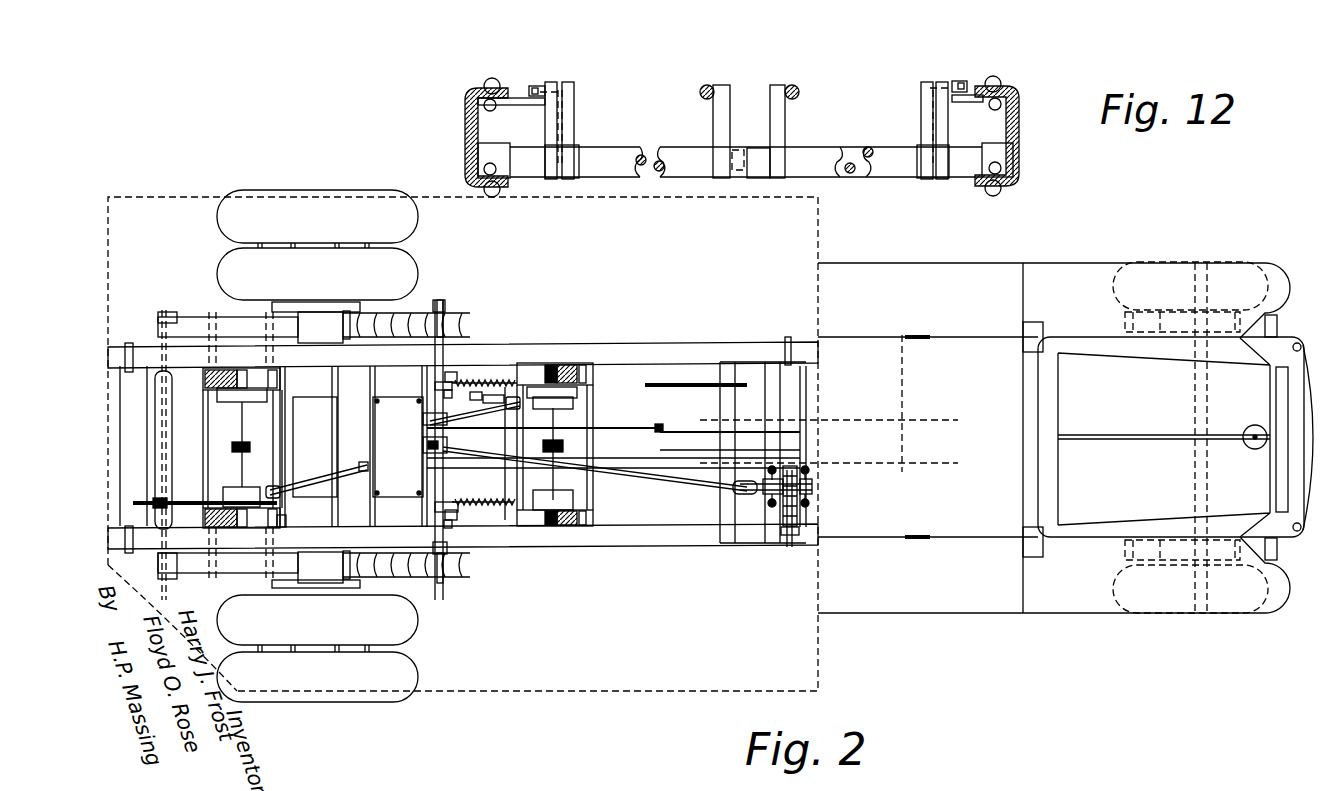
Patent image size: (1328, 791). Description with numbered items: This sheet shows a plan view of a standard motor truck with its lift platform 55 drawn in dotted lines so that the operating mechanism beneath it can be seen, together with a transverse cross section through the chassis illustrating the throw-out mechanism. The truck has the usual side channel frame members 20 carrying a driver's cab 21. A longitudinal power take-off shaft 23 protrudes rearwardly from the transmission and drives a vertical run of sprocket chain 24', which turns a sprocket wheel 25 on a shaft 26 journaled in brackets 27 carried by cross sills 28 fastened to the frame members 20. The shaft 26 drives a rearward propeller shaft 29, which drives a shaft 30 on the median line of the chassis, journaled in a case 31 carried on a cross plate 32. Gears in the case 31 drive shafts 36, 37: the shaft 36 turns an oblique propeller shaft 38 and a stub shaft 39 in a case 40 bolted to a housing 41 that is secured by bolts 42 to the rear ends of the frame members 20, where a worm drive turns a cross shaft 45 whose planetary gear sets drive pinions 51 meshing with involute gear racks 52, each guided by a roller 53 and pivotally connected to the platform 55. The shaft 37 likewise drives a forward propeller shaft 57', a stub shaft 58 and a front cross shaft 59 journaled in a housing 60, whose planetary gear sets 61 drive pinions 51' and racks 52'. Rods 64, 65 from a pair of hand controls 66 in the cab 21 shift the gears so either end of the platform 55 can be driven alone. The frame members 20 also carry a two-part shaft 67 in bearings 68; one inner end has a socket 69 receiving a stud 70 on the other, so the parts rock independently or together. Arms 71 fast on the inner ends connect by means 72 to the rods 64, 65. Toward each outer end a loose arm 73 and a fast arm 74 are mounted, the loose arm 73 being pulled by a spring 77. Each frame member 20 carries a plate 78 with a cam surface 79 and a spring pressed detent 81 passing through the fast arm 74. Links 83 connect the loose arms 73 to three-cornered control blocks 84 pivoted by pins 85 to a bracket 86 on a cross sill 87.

In FIG. 12, the side channel frame members 20 is at (466, 101).
In FIG. 2, the side channel frame members 20 is at (700, 336).
In FIG. 2, the driver's cab 21 is at (940, 593).
In FIG. 2, the power take-off shaft 23 is at (800, 535).
In FIG. 2, the sprocket chain 24' is at (830, 500).
In FIG. 2, the sprocket wheel 25 is at (795, 478).
In FIG. 2, the shaft 26 is at (770, 495).
In FIG. 2, the brackets 27 is at (786, 520).
In FIG. 2, the cross sills 28 is at (808, 398).
In FIG. 2, the propeller shaft 29 is at (705, 480).
In FIG. 2, the shaft 30 is at (445, 425).
In FIG. 2, the case 31 is at (410, 575).
In FIG. 2, the cross plate 32 is at (403, 572).
In FIG. 2, the shaft 36 is at (366, 465).
In FIG. 2, the shaft 37 is at (425, 416).
In FIG. 2, the propeller shaft 38 is at (305, 490).
In FIG. 2, the stub shaft 39 is at (285, 525).
In FIG. 2, the case 40 is at (245, 450).
In FIG. 2, the housing 41 is at (240, 465).
In FIG. 2, the bolts 42 is at (268, 345).
In FIG. 2, the cross shaft 45 is at (240, 470).
In FIG. 2, the pinion 51 is at (228, 473).
In FIG. 2, the pinions 51' is at (589, 436).
In FIG. 2, the gear rack 52 is at (231, 448).
In FIG. 2, the involute racks 52' is at (590, 456).
In FIG. 2, the roller 53 is at (200, 372).
In FIG. 2, the platform 55 is at (620, 692).
In FIG. 2, the propeller shaft 57' is at (505, 344).
In FIG. 2, the stub shaft 58 is at (518, 400).
In FIG. 2, the front cross shaft 59 is at (557, 477).
In FIG. 2, the housing 60 is at (573, 493).
In FIG. 2, the planetary gear sets 61 is at (600, 400).
In FIG. 12, the rod 64 is at (708, 85).
In FIG. 2, the rod 64 is at (660, 425).
In FIG. 12, the rod 65 is at (797, 88).
In FIG. 2, the rod 65 is at (690, 468).
In FIG. 2, the hand controls 66 is at (905, 465).
In FIG. 12, the two-part shaft 67 is at (640, 160).
In FIG. 2, the two-part shaft 67 is at (435, 475).
In FIG. 12, the bearings 68 is at (490, 158).
In FIG. 12, the socket 69 is at (740, 150).
In FIG. 12, the stud 70 is at (765, 178).
In FIG. 12, the arms 71 is at (715, 112).
In FIG. 2, the arms 71 is at (425, 450).
In FIG. 12, the connecting means 72 is at (738, 90).
In FIG. 12, the loose arm 73 is at (577, 105).
In FIG. 2, the loose arm 73 is at (432, 383).
In FIG. 12, the fast arm 74 is at (554, 84).
In FIG. 2, the fast arm 74 is at (440, 380).
In FIG. 2, the spring 77 is at (500, 383).
In FIG. 12, the plate 78 is at (520, 100).
In FIG. 2, the plate 78 is at (447, 380).
In FIG. 12, the cam surface 79 is at (535, 87).
In FIG. 2, the cam surface 79 is at (497, 395).
In FIG. 12, the spring pressed detent 81 is at (570, 86).
In FIG. 2, the links 83 is at (700, 378).
In FIG. 2, the control blocks 84 is at (740, 393).
In FIG. 2, the pins 85 is at (815, 345).
In FIG. 2, the bracket 86 is at (160, 504).
In FIG. 2, the cross sill 87 is at (152, 398).